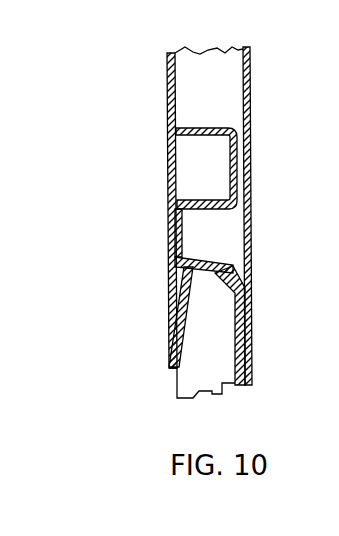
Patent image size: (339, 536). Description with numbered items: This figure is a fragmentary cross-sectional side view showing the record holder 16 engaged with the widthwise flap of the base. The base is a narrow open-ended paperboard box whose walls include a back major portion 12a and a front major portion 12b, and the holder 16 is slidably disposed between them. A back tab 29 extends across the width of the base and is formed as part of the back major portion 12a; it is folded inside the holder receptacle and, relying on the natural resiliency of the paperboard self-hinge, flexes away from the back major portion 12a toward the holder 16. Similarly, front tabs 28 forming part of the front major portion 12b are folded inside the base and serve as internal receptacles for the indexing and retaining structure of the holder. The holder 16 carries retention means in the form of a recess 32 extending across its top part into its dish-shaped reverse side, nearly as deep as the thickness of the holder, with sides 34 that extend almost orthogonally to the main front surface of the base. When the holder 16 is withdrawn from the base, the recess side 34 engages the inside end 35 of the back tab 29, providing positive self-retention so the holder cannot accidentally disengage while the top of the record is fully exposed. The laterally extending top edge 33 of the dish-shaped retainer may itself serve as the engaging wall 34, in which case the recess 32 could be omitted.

The back major portion 12a is at (169, 93).
The front major portion 12b is at (249, 73).
The holder 16 is at (219, 129).
The top edge 33 is at (194, 135).
The recess side 34 is at (207, 209).
The recess 32 is at (222, 235).
The inside end 35 is at (173, 272).
The back tab 29 is at (174, 307).
The front tabs 28 is at (246, 327).